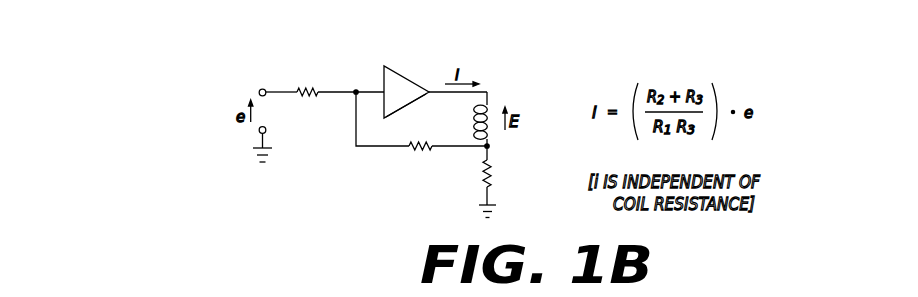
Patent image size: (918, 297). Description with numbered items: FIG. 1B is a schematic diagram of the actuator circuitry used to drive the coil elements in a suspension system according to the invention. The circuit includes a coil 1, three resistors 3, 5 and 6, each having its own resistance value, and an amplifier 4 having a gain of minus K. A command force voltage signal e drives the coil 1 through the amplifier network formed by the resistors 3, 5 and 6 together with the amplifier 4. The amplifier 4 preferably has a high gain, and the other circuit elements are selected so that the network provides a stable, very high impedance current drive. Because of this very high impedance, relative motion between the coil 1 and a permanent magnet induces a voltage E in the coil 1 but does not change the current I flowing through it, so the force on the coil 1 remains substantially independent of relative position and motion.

The coil 1 is at (494, 91).
The resistor 3 is at (301, 99).
The amplifier 4 is at (404, 107).
The resistor 5 is at (402, 155).
The resistor 6 is at (476, 182).